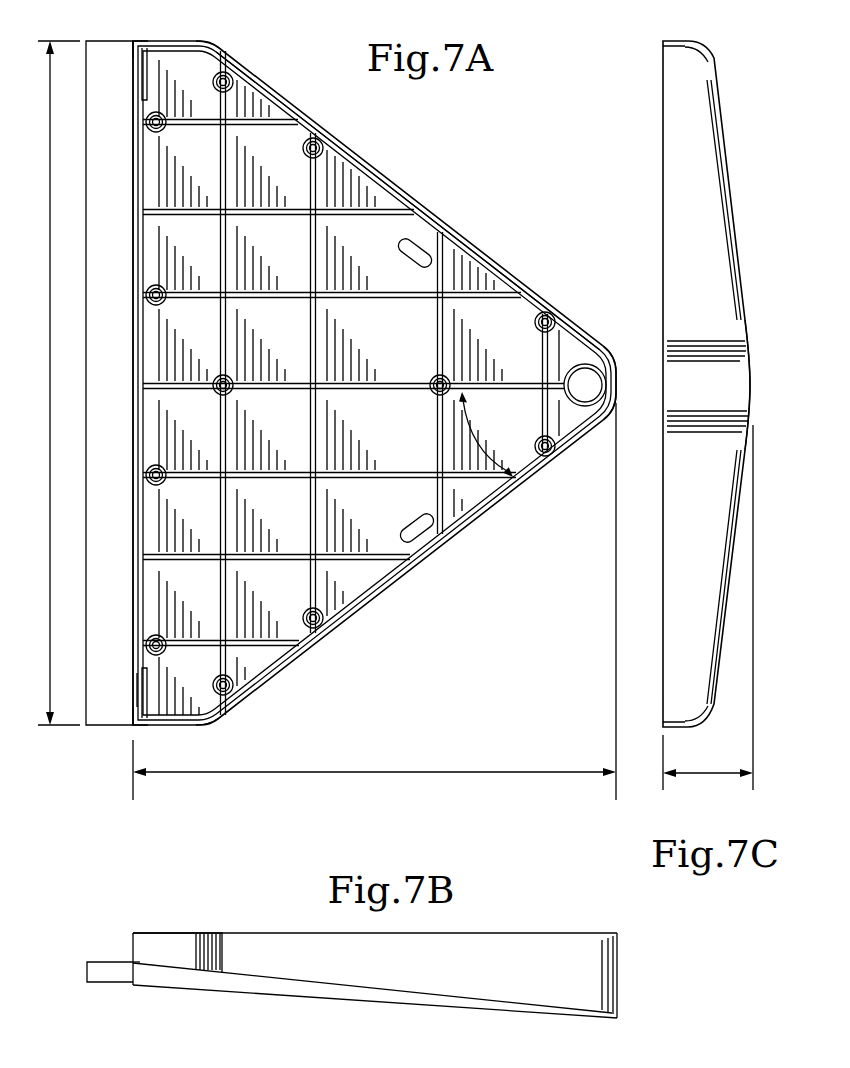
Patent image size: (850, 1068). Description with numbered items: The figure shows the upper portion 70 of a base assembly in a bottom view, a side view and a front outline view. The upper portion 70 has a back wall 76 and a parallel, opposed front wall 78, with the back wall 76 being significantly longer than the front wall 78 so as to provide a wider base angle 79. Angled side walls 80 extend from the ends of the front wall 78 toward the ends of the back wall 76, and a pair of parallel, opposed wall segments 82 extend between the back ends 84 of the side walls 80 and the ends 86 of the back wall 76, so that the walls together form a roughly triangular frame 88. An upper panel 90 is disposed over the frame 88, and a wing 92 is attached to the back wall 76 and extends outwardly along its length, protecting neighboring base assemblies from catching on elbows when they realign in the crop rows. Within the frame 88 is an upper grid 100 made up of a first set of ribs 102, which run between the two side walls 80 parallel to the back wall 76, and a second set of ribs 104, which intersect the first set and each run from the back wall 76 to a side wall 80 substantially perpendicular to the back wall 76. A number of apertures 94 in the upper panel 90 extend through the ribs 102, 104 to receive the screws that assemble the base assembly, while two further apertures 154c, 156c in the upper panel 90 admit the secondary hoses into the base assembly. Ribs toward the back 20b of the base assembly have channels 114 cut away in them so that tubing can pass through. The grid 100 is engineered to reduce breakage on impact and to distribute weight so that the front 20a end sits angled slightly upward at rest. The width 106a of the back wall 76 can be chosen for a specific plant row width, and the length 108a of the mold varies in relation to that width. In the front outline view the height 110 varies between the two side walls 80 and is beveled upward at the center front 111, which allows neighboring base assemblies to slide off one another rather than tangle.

In FIG. 7A, the upper portion 70 is at (451, 173).
In FIG. 7B, the upper portion 70 is at (642, 936).
In FIG. 7C, the upper portion 70 is at (746, 110).
In FIG. 7A, the back wall 76 is at (130, 295).
In FIG. 7B, the back wall 76 is at (132, 948).
In FIG. 7A, the front wall 78 is at (613, 378).
In FIG. 7B, the front wall 78 is at (619, 971).
In FIG. 7C, the front wall 78 is at (735, 387).
In FIG. 7A, the base angle 79 is at (480, 445).
In FIG. 7A, the side walls 80 is at (466, 242).
In FIG. 7B, the side walls 80 is at (500, 955).
In FIG. 7A, the wall segments 82 is at (160, 40).
In FIG. 7B, the wall segments 82 is at (162, 948).
In FIG. 7C, the wall segments 82 is at (690, 40).
In FIG. 7A, the back ends 84 is at (225, 38).
In FIG. 7B, the back ends 84 is at (212, 935).
In FIG. 7A, the ends 86 is at (127, 33).
In FIG. 7B, the ends 86 is at (126, 932).
In FIG. 7A, the frame 88 is at (387, 166).
In FIG. 7A, the upper panel 90 is at (503, 322).
In FIG. 7B, the upper panel 90 is at (475, 932).
In FIG. 7C, the upper panel 90 is at (737, 212).
In FIG. 7A, the wing 92 is at (115, 458).
In FIG. 7B, the wing 92 is at (117, 978).
In FIG. 7A, the apertures 94 is at (325, 137).
In FIG. 7A, the upper grid 100 is at (457, 288).
In FIG. 7A, the first set of ribs 102 is at (470, 480).
In FIG. 7A, the second set of ribs 104 is at (233, 372).
In FIG. 7A, the width 106a is at (49, 379).
In FIG. 7A, the length 108a is at (440, 775).
In FIG. 7C, the height 110 is at (686, 777).
In FIG. 7C, the center front 111 is at (750, 403).
In FIG. 7A, the channels 114 is at (365, 553).
In FIG. 7A, the aperture 154c is at (420, 533).
In FIG. 7A, the aperture 156c is at (420, 236).
In FIG. 7A, the front 20a is at (621, 408).
In FIG. 7A, the back 20b is at (124, 515).